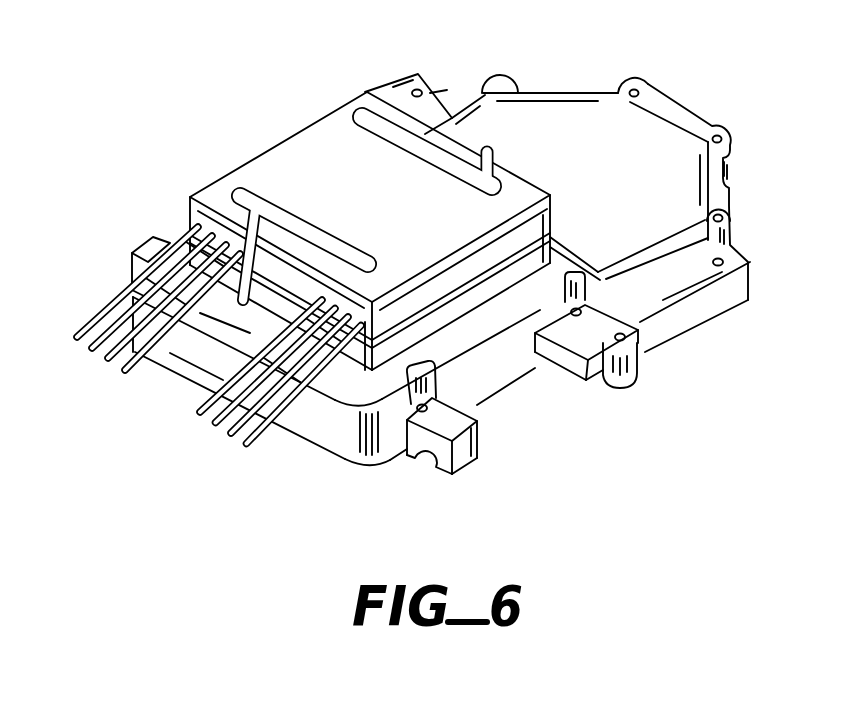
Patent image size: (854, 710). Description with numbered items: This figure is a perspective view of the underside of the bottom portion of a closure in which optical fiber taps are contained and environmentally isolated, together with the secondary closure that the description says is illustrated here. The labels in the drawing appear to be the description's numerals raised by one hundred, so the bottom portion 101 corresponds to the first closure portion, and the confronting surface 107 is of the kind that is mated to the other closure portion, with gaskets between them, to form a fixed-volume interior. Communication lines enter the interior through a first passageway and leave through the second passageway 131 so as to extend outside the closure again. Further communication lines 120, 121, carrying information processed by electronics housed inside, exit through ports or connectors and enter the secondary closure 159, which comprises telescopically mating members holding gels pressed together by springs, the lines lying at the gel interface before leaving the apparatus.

The cover 101 is at (542, 82).
The frame 107 is at (493, 400).
The first connector with wires 120 is at (147, 357).
The second connector with wires 121 is at (267, 432).
The connector 131 is at (590, 398).
The module housing 159 is at (328, 156).